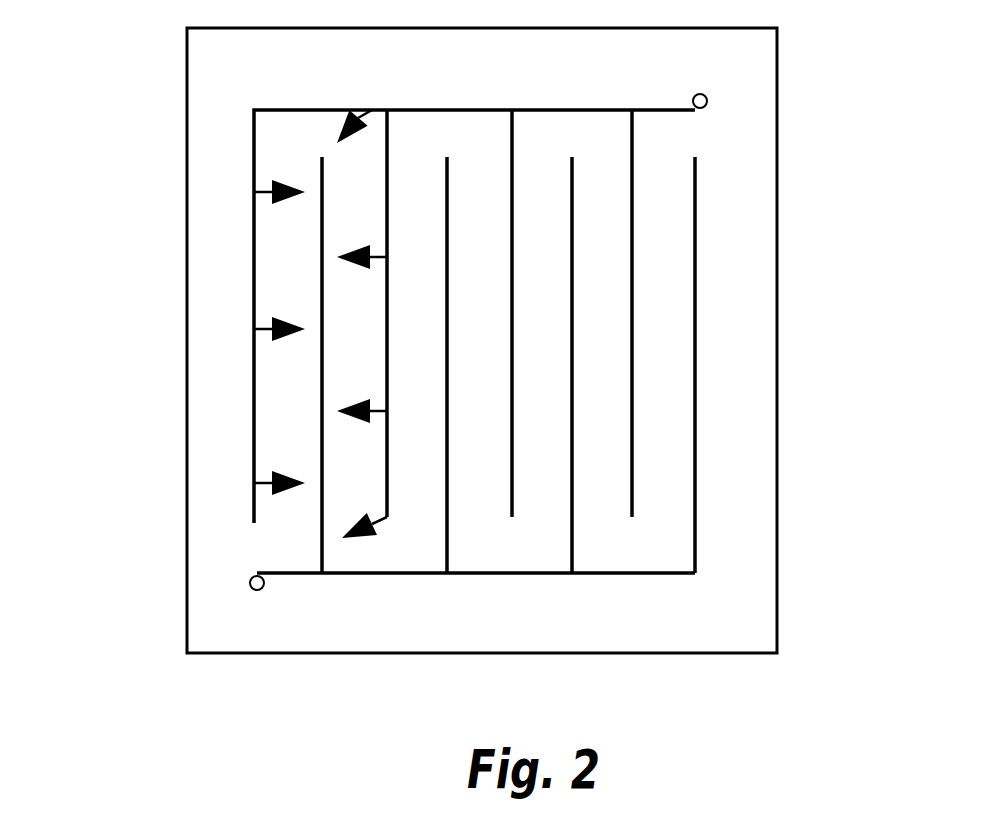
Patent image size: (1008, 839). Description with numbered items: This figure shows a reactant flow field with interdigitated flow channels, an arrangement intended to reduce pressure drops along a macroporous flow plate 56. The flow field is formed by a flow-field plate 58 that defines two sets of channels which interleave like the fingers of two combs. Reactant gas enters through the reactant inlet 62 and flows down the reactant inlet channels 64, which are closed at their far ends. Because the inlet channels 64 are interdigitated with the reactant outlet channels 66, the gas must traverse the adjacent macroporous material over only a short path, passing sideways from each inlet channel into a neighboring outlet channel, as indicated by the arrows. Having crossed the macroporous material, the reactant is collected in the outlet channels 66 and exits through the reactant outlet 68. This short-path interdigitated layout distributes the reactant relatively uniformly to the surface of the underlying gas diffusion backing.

The macroporous flow plate 56 is at (136, 272).
The flow-field plate 58 is at (753, 597).
The reactant inlet 62 is at (579, 280).
The reactant inlet channels 64 is at (632, 230).
The reactant outlet channels 66 is at (695, 295).
The reactant outlet 68 is at (483, 390).